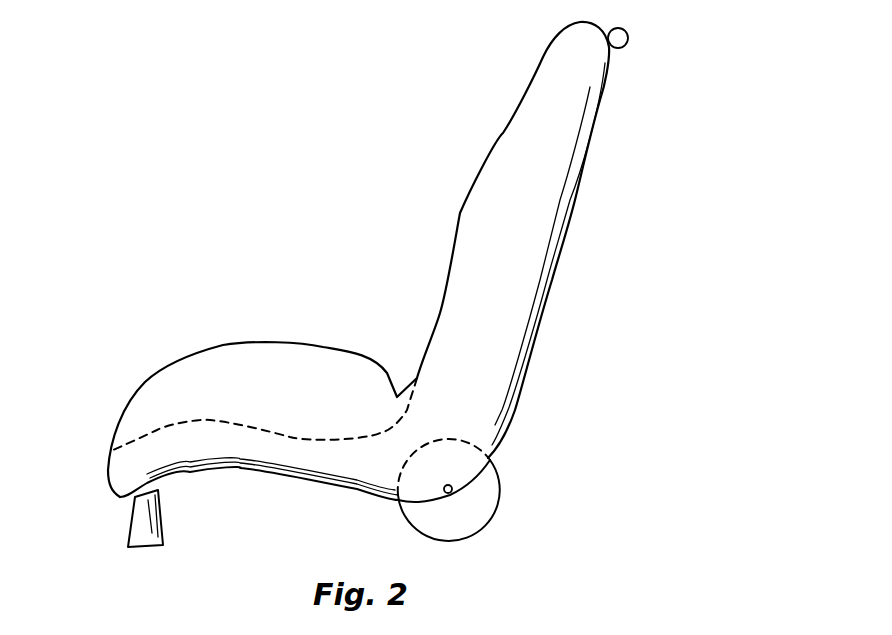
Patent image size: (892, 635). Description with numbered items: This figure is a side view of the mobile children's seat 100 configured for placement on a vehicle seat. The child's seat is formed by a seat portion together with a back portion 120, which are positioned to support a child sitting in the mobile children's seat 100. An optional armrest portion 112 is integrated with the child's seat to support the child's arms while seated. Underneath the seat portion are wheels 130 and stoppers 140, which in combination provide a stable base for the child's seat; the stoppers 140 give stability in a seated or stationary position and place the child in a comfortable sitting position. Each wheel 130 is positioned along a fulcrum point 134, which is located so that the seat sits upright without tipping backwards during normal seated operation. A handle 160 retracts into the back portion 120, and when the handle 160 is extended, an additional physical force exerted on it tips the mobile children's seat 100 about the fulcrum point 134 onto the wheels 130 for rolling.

The mobile children's seat 100 is at (288, 254).
The armrest portion 112 is at (157, 375).
The back portion 120 is at (540, 218).
The wheel 130 is at (477, 512).
The fulcrum point 134 is at (452, 486).
The stopper 140 is at (140, 520).
The handle 160 is at (628, 38).